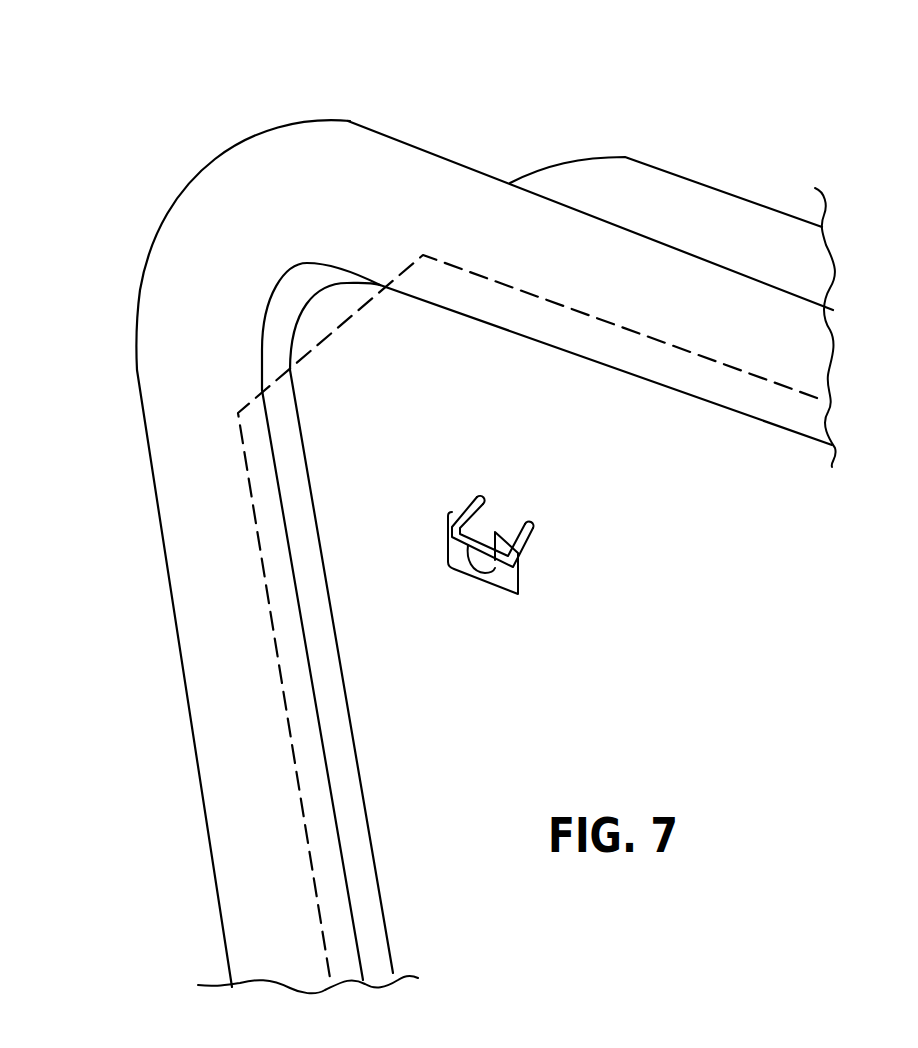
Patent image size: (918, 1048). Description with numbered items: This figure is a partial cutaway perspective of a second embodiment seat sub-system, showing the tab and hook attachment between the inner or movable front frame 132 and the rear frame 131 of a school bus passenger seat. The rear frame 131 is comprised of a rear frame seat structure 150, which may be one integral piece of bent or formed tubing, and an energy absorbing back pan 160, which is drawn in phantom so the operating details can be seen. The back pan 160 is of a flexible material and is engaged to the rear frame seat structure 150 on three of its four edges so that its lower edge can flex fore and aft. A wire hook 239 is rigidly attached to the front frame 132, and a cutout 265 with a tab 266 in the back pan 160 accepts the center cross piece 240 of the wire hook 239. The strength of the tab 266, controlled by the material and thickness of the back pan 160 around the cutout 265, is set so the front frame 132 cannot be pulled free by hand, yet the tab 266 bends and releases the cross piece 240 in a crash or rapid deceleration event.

The rear frame 131 is at (347, 121).
The front frame 132 is at (633, 157).
The rear frame seat structure 150 is at (143, 275).
The energy absorbing back pan 160 is at (272, 622).
The wire hook 239 is at (525, 555).
The center cross piece 240 is at (482, 540).
The cutout 265 is at (515, 595).
The tab 266 is at (480, 563).